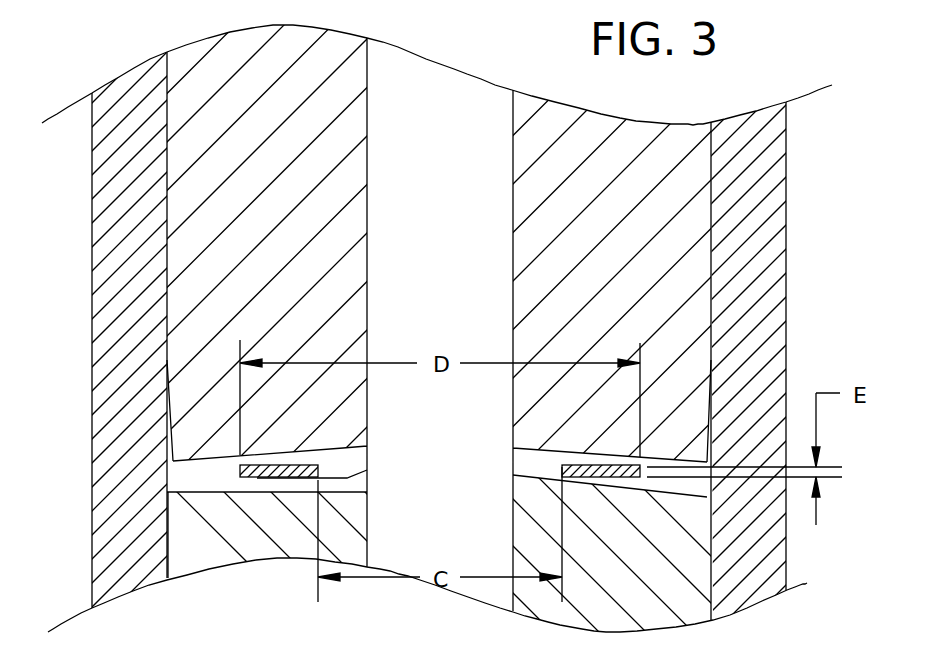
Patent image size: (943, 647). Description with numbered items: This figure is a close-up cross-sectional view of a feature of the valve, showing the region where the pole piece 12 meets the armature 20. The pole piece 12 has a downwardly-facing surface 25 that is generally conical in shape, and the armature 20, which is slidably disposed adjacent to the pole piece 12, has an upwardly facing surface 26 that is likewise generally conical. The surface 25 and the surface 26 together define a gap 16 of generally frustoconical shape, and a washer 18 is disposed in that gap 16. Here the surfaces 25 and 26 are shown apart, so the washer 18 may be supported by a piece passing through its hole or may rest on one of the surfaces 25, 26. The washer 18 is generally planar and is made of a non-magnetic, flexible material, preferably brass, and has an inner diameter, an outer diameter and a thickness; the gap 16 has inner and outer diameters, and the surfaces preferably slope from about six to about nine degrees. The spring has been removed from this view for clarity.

The pole piece 12 is at (342, 133).
The gap 16 is at (177, 478).
The washer 18 is at (257, 478).
The armature 20 is at (207, 545).
The downwardly-facing surface 25 is at (368, 448).
The upwardly facing surface 26 is at (368, 470).